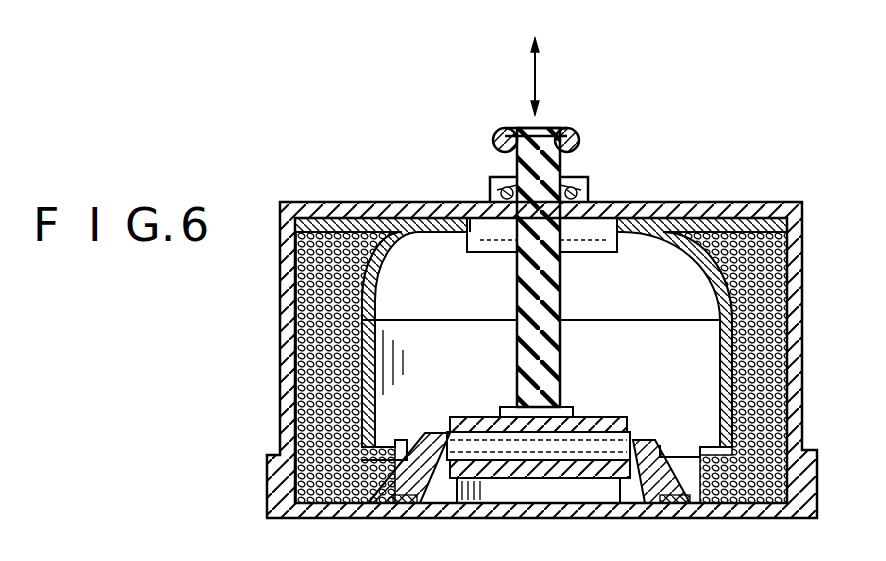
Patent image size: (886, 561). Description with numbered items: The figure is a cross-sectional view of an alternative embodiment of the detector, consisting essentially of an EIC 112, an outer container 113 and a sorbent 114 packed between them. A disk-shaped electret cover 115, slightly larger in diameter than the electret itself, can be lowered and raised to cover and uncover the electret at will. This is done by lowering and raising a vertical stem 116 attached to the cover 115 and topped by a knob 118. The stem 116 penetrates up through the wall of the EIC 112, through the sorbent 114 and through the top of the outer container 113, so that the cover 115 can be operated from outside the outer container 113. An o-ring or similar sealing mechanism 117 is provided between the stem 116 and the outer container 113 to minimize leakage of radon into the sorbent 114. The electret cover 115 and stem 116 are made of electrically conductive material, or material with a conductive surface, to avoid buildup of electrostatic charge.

The EIC 112 is at (298, 315).
The outer container 113 is at (285, 341).
The sorbent 114 is at (287, 378).
The electret cover 115 is at (595, 418).
The vertical stem 116 is at (562, 300).
The sealing mechanism 117 is at (586, 190).
The knob 118 is at (497, 132).